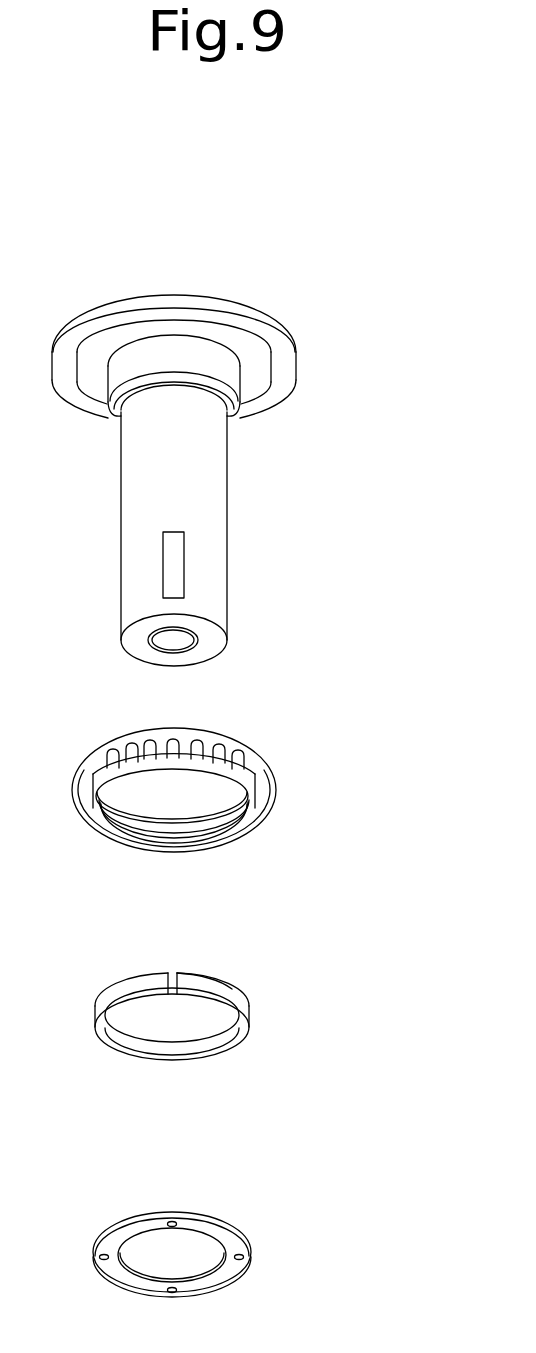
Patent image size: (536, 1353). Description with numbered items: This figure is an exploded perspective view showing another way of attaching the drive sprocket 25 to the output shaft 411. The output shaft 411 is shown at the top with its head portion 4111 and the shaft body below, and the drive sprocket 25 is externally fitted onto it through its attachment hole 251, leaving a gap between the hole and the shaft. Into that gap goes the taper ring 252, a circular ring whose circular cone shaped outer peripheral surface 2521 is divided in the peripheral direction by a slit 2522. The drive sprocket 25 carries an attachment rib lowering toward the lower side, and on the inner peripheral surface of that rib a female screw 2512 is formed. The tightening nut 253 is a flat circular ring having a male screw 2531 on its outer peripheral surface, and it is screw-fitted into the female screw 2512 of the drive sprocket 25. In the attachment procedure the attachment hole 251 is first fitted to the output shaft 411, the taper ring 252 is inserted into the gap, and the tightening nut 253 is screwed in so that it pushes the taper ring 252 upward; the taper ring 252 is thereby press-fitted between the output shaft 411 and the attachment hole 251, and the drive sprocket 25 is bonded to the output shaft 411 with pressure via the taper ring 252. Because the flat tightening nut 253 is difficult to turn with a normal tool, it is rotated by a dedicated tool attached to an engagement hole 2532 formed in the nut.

The flange head of shaft 4111 is at (238, 413).
The output shaft 411 is at (217, 550).
The drive sprocket 25 is at (249, 812).
The attachment hole 251 is at (242, 804).
The female screw 2512 is at (225, 837).
The taper ring 252 is at (261, 1021).
The circular cone shaped outer peripheral surface 2521 is at (228, 989).
The slit 2522 is at (173, 980).
The tightening nut 253 is at (260, 1270).
The male screw 2531 is at (232, 1224).
The engagement hole 2532 is at (250, 1260).